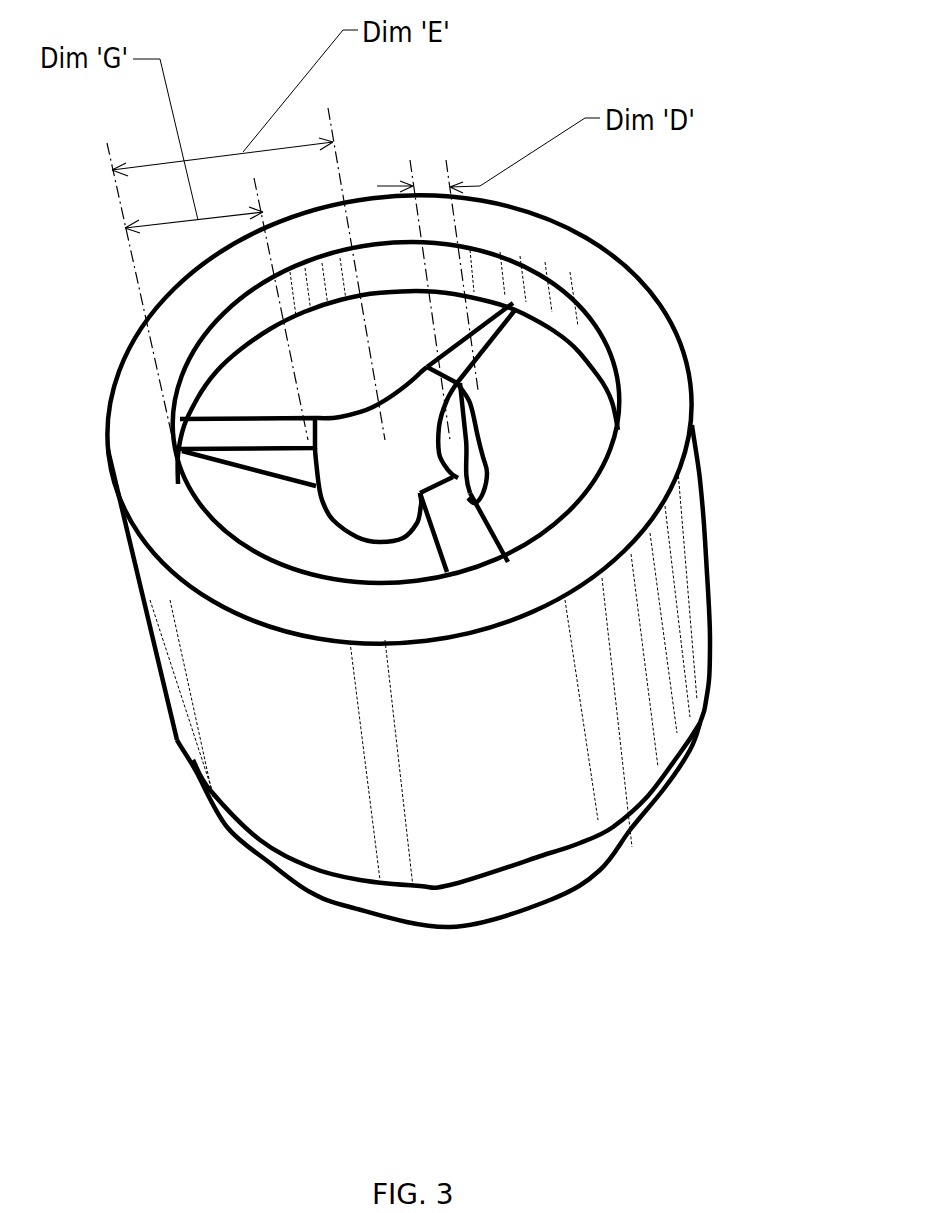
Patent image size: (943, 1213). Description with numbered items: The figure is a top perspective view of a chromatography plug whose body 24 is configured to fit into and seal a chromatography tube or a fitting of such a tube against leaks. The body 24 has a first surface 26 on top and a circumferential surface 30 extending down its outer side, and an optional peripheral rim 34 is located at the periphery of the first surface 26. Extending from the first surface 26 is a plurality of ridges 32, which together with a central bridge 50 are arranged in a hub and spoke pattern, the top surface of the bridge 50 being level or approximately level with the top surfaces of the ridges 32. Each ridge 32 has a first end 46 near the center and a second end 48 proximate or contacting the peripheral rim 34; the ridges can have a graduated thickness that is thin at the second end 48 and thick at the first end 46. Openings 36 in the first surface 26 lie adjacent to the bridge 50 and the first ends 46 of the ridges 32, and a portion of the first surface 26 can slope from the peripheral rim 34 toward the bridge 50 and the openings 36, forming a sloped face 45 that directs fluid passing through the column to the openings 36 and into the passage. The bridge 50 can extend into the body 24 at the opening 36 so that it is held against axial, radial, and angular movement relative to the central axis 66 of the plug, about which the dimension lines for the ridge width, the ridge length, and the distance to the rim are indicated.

The body 24 is at (450, 845).
The first surface 26 is at (565, 380).
The circumferential surface 30 is at (655, 750).
The ridges 32 is at (445, 565).
The peripheral rim 34 is at (648, 405).
The openings 36 is at (492, 462).
The sloped face 45 is at (520, 358).
The first end 46 is at (292, 490).
The second end 48 is at (183, 452).
The bridge 50 is at (357, 540).
The central axis 66 is at (343, 180).